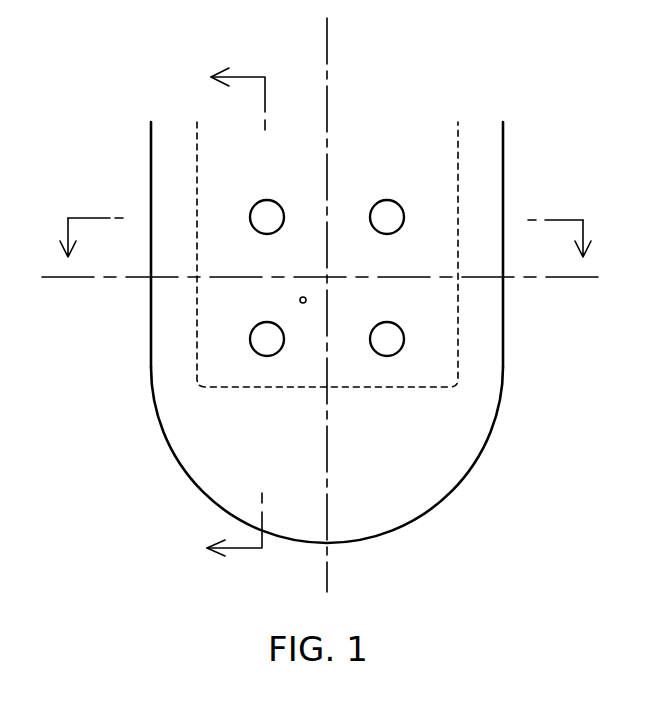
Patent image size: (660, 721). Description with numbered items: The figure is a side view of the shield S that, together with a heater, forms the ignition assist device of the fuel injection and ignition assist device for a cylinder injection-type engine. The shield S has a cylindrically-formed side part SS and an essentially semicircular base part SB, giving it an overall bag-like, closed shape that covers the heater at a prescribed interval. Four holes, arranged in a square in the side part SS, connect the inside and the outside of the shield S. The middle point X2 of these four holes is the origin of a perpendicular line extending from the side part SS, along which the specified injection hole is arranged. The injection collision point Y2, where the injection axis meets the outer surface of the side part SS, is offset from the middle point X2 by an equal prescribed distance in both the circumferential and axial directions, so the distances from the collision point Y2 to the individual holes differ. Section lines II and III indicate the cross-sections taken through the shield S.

The shield S is at (385, 343).
The side part SS is at (490, 182).
The base part SB is at (393, 490).
The middle point X2 is at (331, 277).
The injection collision point Y2 is at (299, 300).
The section line II- II is at (321, 233).
The section line III- III is at (240, 318).